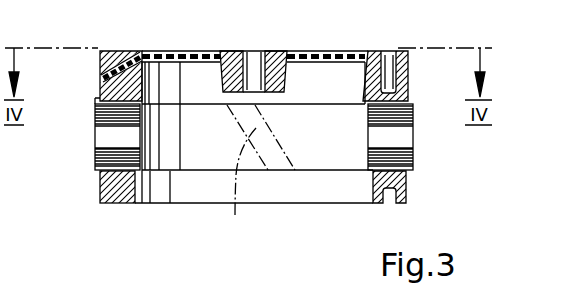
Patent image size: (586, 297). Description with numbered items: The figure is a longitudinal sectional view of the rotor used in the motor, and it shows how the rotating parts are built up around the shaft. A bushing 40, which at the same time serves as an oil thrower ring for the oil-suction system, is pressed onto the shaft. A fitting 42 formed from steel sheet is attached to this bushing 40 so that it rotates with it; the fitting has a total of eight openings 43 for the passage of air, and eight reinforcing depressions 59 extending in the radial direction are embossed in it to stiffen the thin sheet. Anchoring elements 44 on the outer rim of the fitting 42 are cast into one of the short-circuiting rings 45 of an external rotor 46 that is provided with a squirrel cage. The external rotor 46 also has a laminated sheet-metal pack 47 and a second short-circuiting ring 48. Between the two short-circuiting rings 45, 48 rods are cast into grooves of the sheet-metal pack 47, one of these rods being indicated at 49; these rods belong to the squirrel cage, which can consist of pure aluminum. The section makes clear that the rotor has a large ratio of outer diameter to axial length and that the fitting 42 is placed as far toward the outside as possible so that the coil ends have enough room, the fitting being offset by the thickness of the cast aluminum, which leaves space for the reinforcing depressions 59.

The bushing 40 is at (285, 74).
The fitting 42 is at (297, 52).
The openings 43 is at (343, 52).
The anchoring elements 44 is at (125, 66).
The short-circuiting ring 45 is at (110, 63).
The external rotor 46 is at (70, 148).
The laminated sheet-metal pack 47 is at (403, 136).
The second short-circuiting ring 48 is at (401, 190).
The rod 49 is at (257, 176).
The reinforcing depressions 59 is at (180, 52).